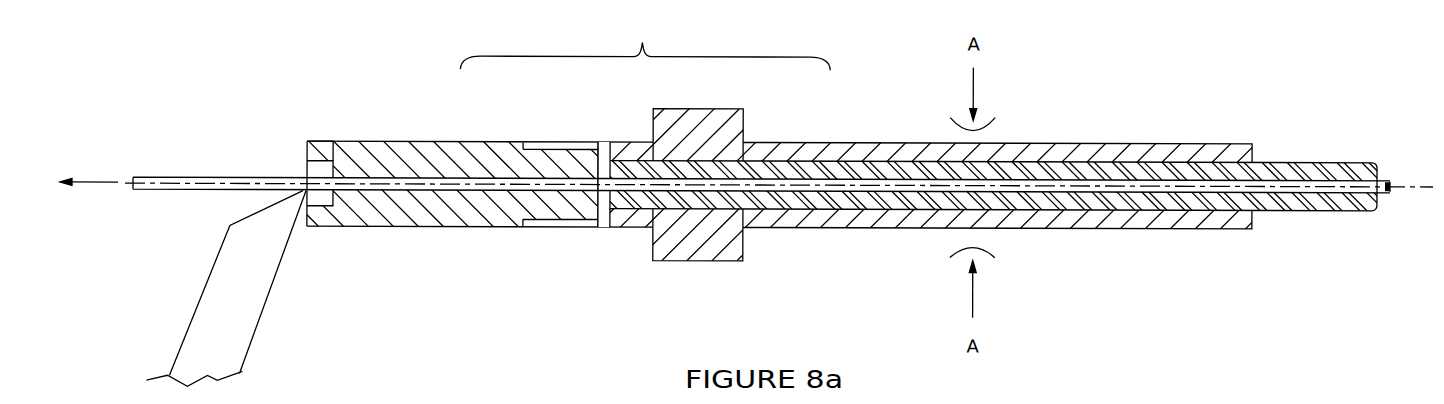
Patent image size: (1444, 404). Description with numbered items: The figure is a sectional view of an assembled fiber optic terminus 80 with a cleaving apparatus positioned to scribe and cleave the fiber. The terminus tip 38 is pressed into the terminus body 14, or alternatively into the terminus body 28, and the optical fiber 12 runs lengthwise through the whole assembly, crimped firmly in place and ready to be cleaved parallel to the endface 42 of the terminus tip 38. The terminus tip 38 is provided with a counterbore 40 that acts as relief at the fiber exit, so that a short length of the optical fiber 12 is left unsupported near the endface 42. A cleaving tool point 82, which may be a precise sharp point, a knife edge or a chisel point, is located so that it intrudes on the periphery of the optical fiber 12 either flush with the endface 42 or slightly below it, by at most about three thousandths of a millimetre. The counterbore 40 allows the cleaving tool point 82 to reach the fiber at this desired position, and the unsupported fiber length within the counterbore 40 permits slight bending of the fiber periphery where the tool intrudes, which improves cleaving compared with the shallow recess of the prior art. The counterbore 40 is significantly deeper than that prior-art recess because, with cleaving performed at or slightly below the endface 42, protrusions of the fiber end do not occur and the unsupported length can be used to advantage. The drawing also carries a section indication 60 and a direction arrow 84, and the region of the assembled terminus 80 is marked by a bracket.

The optical fiber 12 is at (200, 176).
The terminus body 14 is at (668, 263).
The terminus body 28 is at (964, 261).
The terminus tip 38 is at (410, 229).
The counterbore 40 is at (306, 161).
The endface 42 is at (305, 145).
The seal gap 60 is at (607, 141).
The fiber optic terminus 80 is at (645, 38).
The cleaving tool point 82 is at (292, 197).
The direction arrow 84 is at (64, 171).